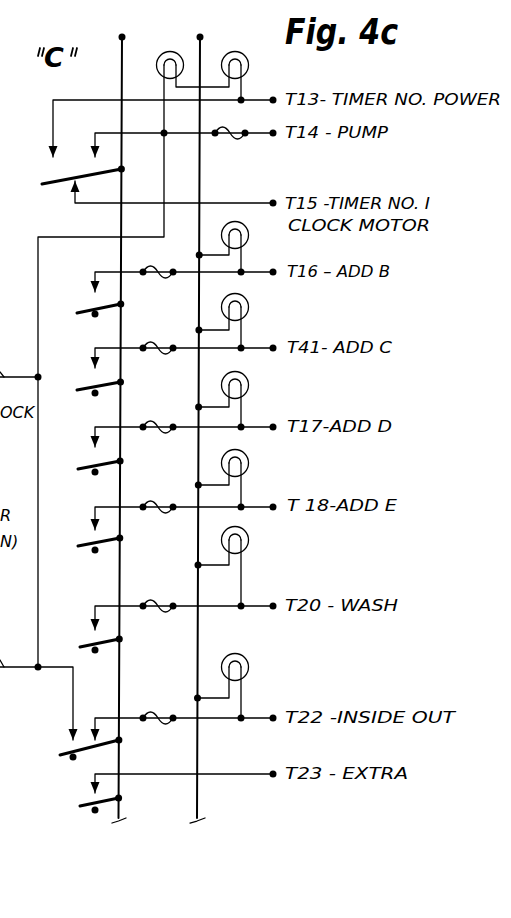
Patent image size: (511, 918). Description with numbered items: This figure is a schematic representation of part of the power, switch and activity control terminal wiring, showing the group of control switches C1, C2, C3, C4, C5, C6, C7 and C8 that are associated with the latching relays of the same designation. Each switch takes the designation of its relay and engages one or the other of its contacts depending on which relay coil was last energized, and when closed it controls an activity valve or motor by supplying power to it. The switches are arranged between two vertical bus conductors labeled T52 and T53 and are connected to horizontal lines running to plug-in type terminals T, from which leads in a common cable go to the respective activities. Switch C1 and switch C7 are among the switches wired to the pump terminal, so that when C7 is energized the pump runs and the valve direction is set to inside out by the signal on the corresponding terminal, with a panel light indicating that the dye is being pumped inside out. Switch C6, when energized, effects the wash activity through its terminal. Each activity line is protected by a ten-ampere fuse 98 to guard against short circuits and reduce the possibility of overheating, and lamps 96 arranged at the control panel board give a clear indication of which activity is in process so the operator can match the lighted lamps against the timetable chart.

The lamp 96 is at (249, 307).
The fuse 98 is at (156, 421).
The timer bus terminal T52 is at (129, 417).
The timer bus terminal T53 is at (204, 417).
The control switch C1 is at (36, 186).
The timer switch C2 is at (72, 312).
The timer switch C3 is at (72, 392).
The timer switch C4 is at (74, 466).
The timer switch C5 is at (74, 544).
The control switch C6 is at (76, 641).
The control switch C7 is at (53, 746).
The timer switch C8 is at (64, 823).